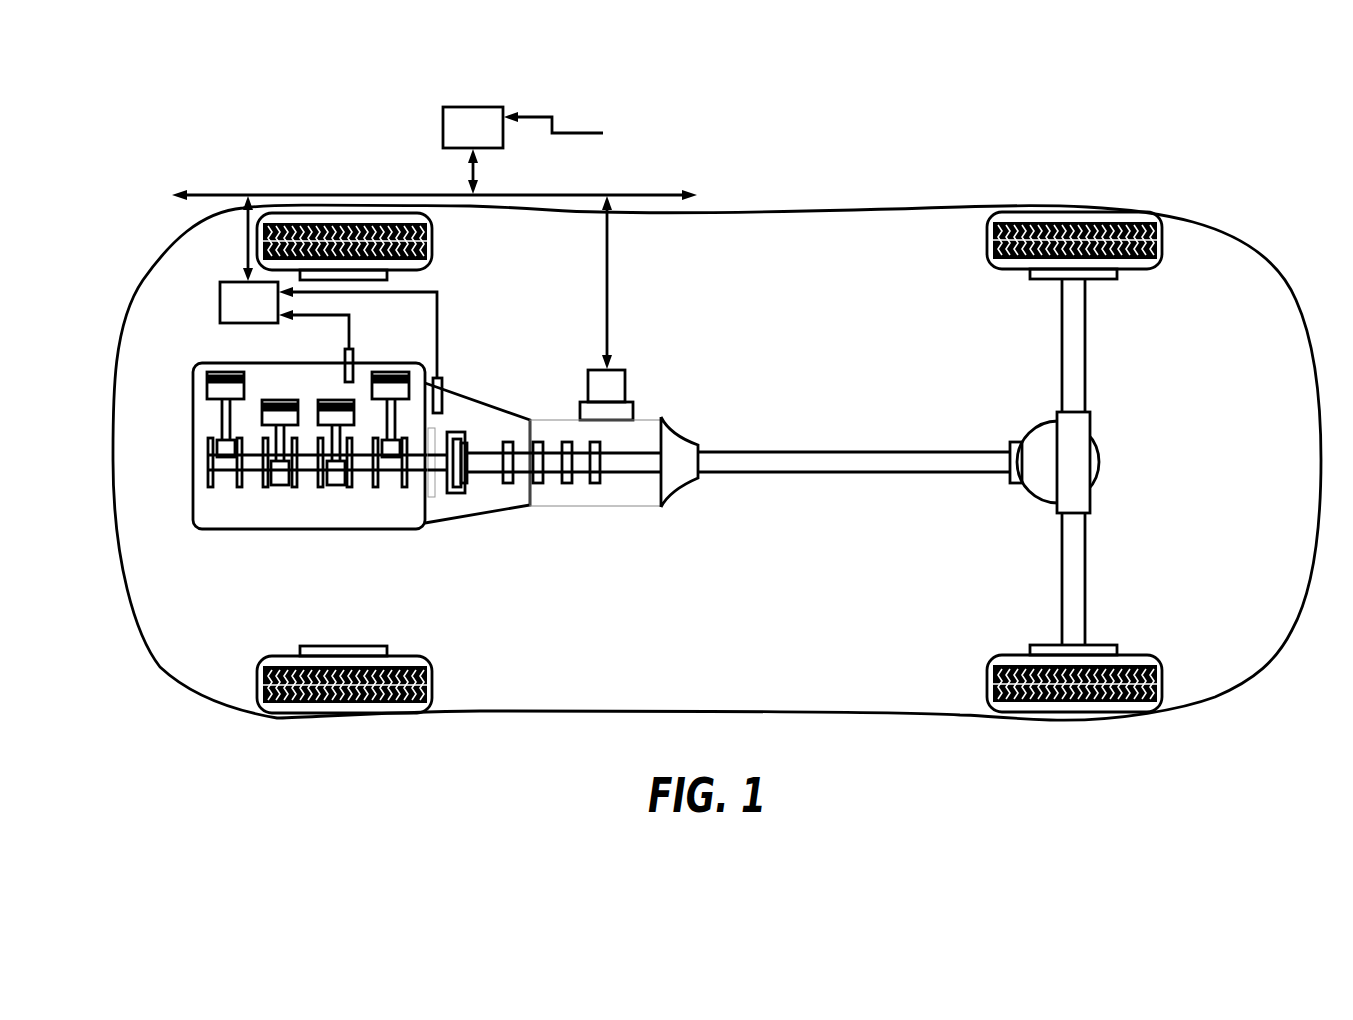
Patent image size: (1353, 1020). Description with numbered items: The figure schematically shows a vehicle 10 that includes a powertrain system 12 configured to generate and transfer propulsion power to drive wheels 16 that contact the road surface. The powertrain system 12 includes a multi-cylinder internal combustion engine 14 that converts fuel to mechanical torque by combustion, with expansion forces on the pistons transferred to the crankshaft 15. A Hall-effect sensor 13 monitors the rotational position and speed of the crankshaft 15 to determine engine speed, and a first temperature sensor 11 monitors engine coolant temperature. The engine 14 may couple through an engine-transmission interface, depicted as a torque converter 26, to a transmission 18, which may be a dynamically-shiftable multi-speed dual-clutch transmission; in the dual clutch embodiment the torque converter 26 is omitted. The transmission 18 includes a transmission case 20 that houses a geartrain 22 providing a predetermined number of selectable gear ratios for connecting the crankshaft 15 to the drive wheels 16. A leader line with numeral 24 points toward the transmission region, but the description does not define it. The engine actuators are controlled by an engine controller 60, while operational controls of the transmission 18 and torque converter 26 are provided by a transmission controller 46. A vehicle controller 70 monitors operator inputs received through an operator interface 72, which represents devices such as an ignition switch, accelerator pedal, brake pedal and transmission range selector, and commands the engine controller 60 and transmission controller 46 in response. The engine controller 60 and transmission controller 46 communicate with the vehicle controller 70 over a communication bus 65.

The vehicle 10 is at (872, 140).
The first temperature sensor 11 is at (353, 358).
The powertrain system 12 is at (257, 549).
The Hall-effect sensor 13 is at (445, 385).
The internal combustion engine 14 is at (233, 529).
The crankshaft 15 is at (205, 465).
The drive wheels 16 is at (1090, 227).
The transmission 18 is at (468, 535).
The transmission case 20 is at (737, 516).
The geartrain 22 is at (570, 478).
The transmission sensor 24 is at (640, 398).
The torque converter 26 is at (455, 433).
The transmission controller 46 is at (585, 383).
The engine controller 60 is at (249, 259).
The communication bus 65 is at (222, 192).
The vehicle controller 70 is at (473, 150).
The operator interface 72 is at (568, 130).